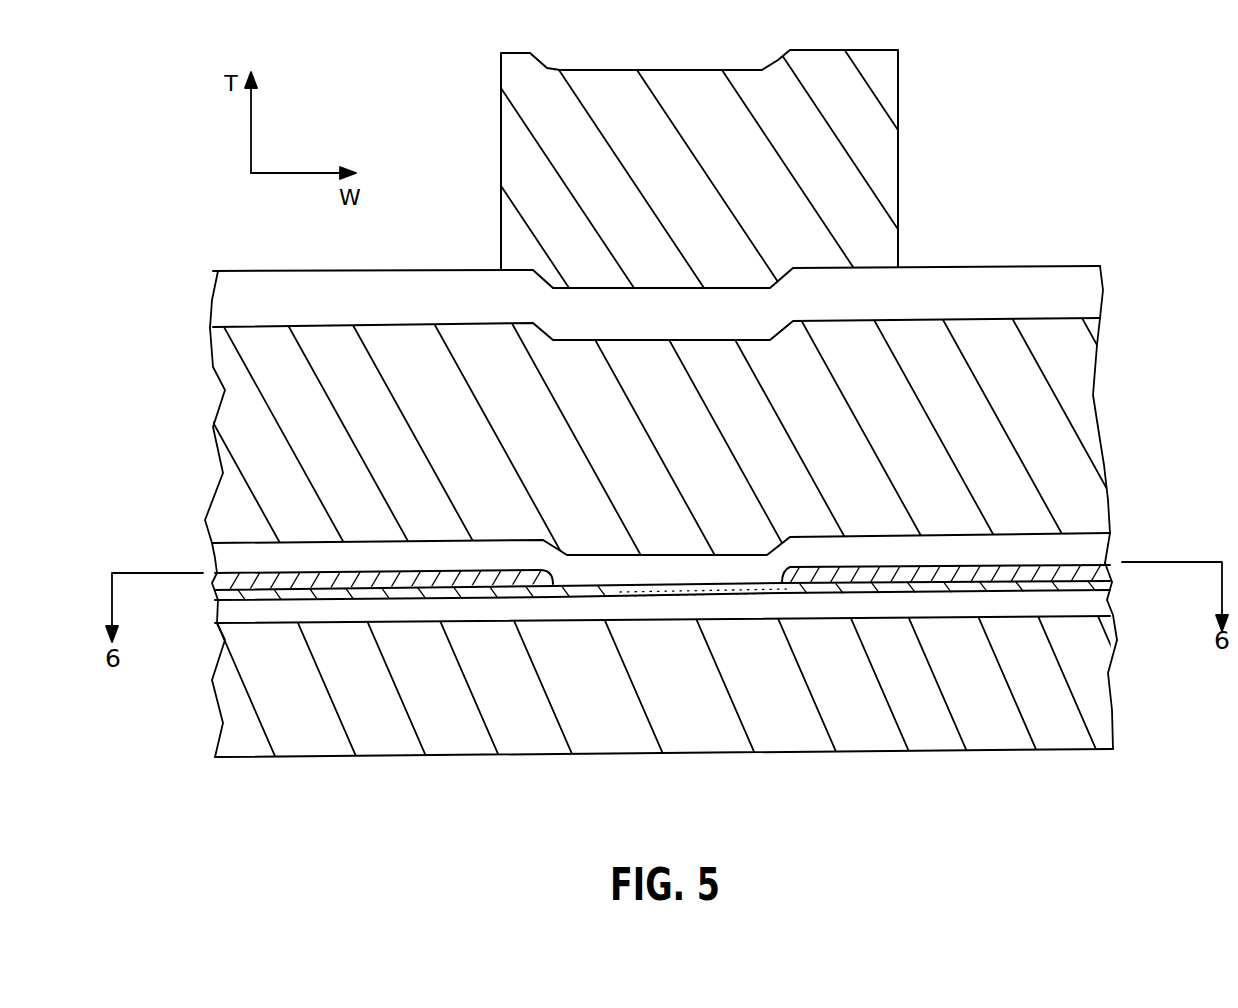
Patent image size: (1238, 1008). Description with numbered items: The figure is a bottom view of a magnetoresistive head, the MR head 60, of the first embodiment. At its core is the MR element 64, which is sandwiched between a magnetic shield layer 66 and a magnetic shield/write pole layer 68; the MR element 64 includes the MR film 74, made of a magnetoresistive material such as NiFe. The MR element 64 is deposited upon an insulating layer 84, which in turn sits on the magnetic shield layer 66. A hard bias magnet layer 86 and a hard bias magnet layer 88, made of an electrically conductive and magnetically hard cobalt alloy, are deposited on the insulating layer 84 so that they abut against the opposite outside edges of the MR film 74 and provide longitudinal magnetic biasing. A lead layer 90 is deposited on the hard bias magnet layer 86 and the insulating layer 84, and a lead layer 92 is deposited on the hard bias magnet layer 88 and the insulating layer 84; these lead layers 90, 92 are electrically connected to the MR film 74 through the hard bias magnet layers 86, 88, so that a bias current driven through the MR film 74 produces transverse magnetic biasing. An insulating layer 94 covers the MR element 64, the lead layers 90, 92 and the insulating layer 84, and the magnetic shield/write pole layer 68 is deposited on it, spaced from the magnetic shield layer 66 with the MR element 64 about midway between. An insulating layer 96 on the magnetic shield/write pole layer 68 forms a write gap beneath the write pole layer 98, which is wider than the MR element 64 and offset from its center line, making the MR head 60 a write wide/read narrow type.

The MR head 60 is at (1025, 187).
The MR element 64 is at (746, 594).
The magnetic shield layer 66 is at (1016, 742).
The magnetic shield/write pole layer 68 is at (1065, 465).
The MR film 74 is at (666, 590).
The insulating layer 84 is at (1098, 606).
The hard bias magnet layer 86 is at (1063, 588).
The hard bias magnet layer 88 is at (240, 597).
The lead layer 90 is at (1090, 573).
The lead layer 92 is at (236, 580).
The insulating layer 94 is at (1090, 542).
The insulating layer 96 is at (1085, 295).
The write pole layer 98 is at (885, 133).